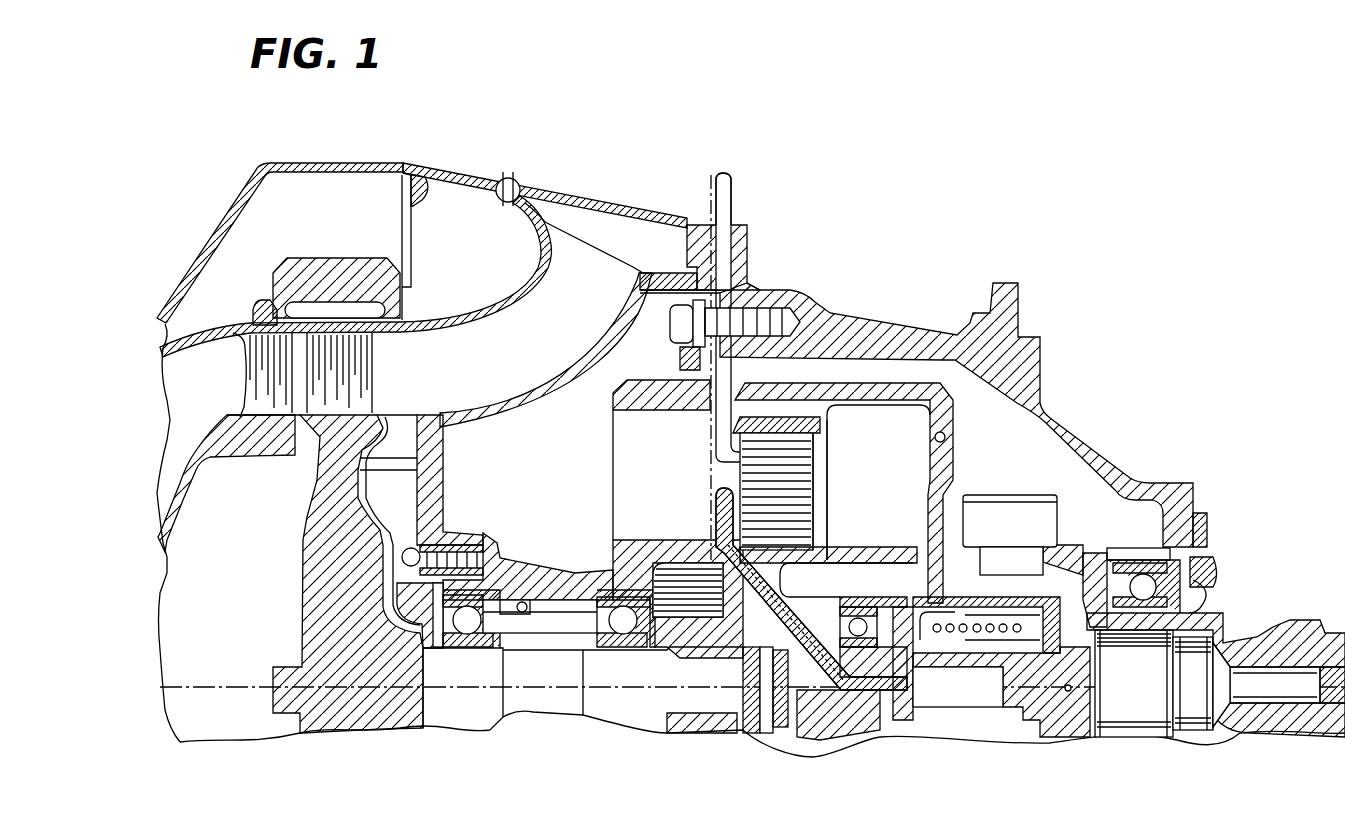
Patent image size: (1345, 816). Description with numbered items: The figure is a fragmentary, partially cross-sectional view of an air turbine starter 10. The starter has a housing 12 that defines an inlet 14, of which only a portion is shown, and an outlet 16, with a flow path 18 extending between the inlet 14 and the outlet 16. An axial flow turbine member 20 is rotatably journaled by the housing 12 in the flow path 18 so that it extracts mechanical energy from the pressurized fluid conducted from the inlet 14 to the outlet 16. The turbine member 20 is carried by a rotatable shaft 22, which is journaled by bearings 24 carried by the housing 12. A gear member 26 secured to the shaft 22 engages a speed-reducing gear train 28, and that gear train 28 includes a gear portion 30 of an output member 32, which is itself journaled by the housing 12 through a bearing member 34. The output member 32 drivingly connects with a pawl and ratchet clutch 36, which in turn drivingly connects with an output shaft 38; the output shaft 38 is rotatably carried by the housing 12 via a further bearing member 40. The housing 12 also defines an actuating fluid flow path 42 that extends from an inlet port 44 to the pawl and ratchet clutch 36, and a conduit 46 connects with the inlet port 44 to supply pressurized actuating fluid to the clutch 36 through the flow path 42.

The air turbine starter 10 is at (941, 203).
The housing 12 is at (866, 327).
The inlet 14 is at (209, 397).
The outlet 16 is at (613, 268).
The flow path 18 is at (471, 383).
The axial flow turbine member 20 is at (318, 612).
The rotatable shaft 22 is at (470, 703).
The bearings 24 is at (457, 645).
The gear member 26 is at (680, 637).
The speed-reducing gear train 28 is at (655, 357).
The gear portion 30 is at (818, 446).
The output member 32 is at (940, 477).
The bearing member 34 is at (862, 618).
The pawl and ratchet clutch 36 is at (1106, 512).
The output shaft 38 is at (1247, 637).
The bearing member 40 is at (1148, 584).
The actuating fluid flow path 42 is at (748, 250).
The inlet port 44 is at (731, 208).
The conduit 46 is at (731, 193).